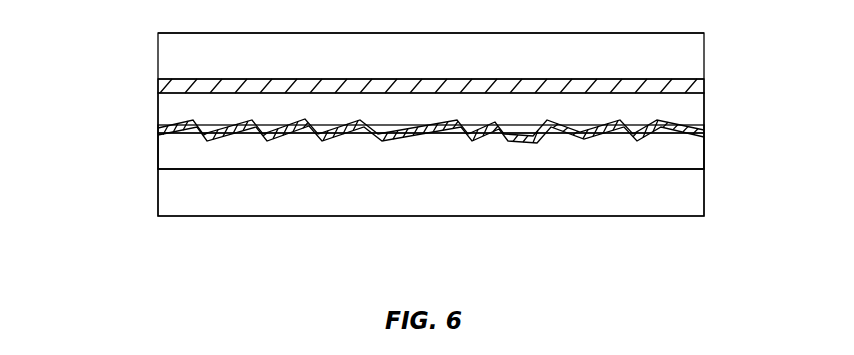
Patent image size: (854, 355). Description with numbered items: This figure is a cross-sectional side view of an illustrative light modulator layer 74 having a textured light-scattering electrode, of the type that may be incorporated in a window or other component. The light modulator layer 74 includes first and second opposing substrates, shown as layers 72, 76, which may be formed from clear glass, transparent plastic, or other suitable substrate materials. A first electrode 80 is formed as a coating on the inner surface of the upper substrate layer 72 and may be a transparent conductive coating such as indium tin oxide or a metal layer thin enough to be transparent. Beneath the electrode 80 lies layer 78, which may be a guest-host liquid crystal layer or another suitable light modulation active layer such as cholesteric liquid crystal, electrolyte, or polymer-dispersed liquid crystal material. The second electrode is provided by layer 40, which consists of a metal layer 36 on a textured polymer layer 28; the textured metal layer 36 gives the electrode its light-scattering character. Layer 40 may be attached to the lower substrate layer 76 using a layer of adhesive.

The light modulator layer 74 is at (77, 45).
The substrate layer 72 is at (165, 56).
The first electrode 80 is at (703, 88).
The light modulation active layer 78 is at (697, 111).
The metal layer 36 is at (183, 127).
The textured polymer layer 28 is at (165, 153).
The substrate layer 76 is at (165, 192).
The textured electrode layer 40 is at (713, 125).